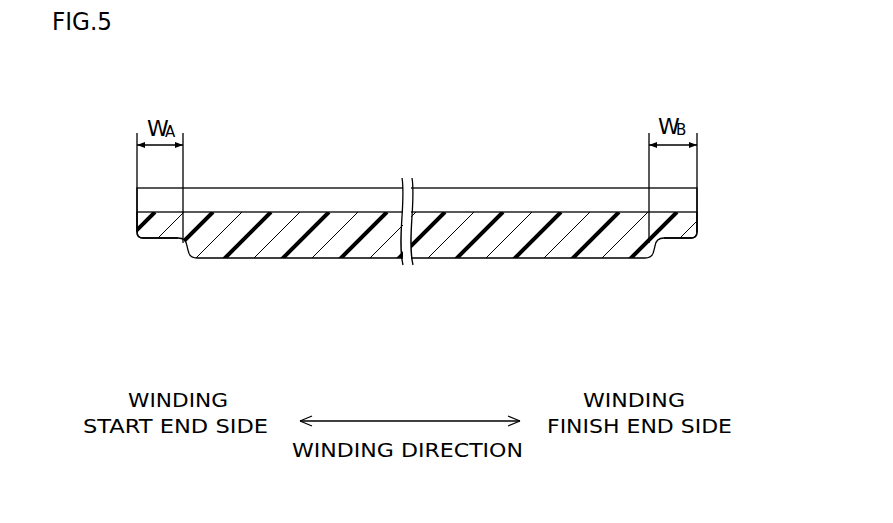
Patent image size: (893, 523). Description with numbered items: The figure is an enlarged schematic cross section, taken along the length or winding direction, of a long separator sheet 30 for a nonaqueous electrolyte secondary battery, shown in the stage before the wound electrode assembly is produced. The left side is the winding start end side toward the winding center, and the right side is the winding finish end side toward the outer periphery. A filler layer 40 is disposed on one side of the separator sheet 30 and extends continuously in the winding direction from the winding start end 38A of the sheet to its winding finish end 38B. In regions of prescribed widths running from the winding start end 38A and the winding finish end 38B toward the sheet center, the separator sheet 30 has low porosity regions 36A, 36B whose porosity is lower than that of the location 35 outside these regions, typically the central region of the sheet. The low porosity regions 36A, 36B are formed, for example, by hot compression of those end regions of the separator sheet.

The separator sheet 30 is at (215, 259).
The location outside the low porosity regions 35 is at (277, 247).
The low porosity region 36A is at (148, 238).
The low porosity region 36B is at (674, 238).
The winding start end 38A is at (137, 219).
The winding finish end 38B is at (698, 224).
The filler layer 40 is at (497, 187).